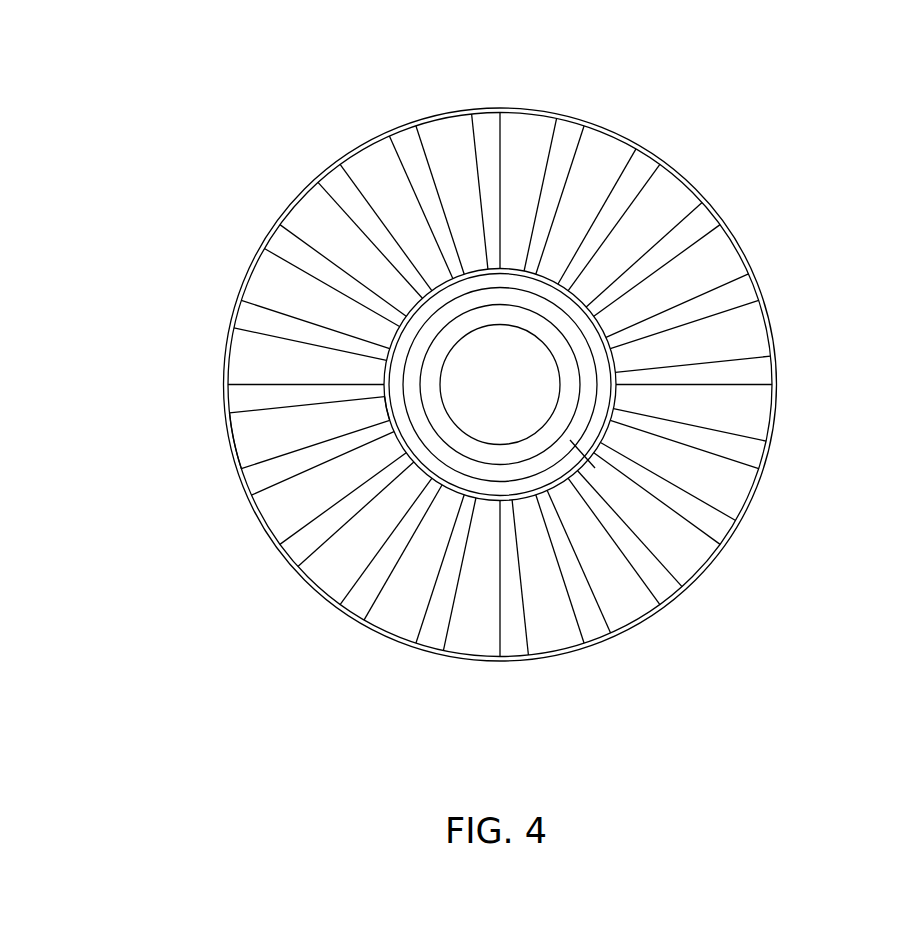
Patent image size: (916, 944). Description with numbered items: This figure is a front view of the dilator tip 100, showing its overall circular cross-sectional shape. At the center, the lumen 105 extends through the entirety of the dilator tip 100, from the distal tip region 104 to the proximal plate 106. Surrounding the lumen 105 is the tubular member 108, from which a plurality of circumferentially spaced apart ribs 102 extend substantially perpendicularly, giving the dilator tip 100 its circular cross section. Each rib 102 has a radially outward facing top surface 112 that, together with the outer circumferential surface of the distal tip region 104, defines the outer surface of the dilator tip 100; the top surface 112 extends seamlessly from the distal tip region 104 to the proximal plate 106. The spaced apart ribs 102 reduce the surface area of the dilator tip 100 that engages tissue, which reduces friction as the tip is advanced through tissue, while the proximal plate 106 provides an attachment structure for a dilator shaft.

The dilator tip 100 is at (805, 118).
The ribs 102 is at (337, 182).
The distal tip region 104 is at (703, 568).
The lumen 105 is at (475, 428).
The proximal plate 106 is at (257, 439).
The tubular member 108 is at (595, 333).
The top surface 112 is at (488, 124).